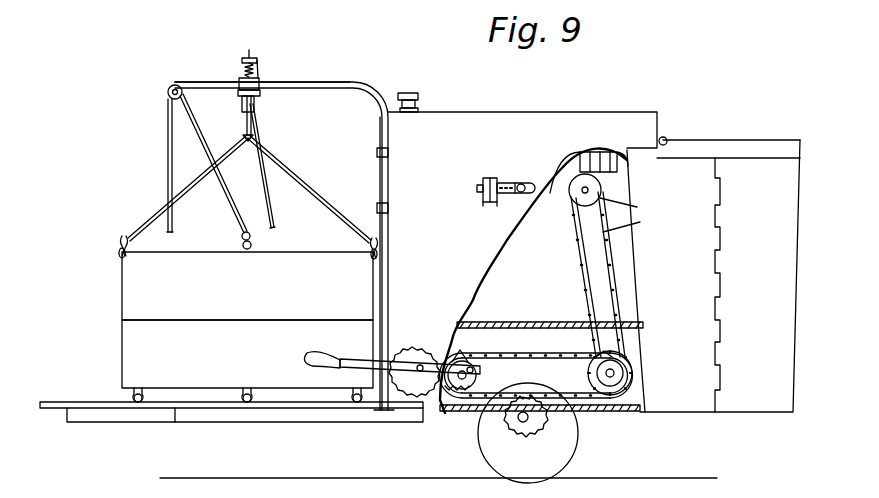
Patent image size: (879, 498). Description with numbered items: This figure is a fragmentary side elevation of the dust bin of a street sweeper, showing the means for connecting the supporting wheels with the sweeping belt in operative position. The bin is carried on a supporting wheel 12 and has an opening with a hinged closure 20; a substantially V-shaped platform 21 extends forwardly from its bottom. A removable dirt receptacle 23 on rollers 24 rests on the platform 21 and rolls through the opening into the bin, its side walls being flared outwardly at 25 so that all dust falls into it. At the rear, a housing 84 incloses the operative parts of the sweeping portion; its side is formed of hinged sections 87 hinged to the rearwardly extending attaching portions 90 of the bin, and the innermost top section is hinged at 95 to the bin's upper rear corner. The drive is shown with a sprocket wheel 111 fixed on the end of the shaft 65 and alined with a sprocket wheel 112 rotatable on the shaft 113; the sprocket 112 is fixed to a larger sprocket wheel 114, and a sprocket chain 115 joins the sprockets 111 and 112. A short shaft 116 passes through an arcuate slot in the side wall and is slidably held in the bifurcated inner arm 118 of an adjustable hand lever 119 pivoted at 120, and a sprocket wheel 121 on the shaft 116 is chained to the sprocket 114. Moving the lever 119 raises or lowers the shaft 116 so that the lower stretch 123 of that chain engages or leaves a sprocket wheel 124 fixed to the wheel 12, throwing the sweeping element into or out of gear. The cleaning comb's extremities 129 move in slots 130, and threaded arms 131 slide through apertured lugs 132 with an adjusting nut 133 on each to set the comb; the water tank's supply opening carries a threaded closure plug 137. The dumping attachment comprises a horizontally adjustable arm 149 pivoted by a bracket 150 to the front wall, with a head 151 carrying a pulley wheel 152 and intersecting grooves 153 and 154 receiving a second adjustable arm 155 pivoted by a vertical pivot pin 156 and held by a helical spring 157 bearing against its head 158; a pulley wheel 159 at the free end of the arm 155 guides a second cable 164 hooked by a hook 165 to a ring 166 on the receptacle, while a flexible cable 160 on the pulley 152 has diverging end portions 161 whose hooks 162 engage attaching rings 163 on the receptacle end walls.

The wheel 12 is at (578, 442).
The hinged closure 20 is at (380, 400).
The platform 21 is at (224, 410).
The removable dirt receptacle 23 is at (247, 354).
The rollers 24 is at (132, 408).
The flared side walls 25 is at (247, 286).
The shaft 65 is at (597, 170).
The housing 84 is at (747, 140).
The hinged sections 87 is at (720, 276).
The rearwardly extending attaching portions 90 is at (562, 281).
The hinge 95 is at (667, 139).
The sprocket wheel 111 is at (574, 204).
The sprocket wheel 112 is at (624, 373).
The shaft 113 is at (615, 365).
The sprocket wheel 114 is at (630, 385).
The sprocket chain 115 is at (580, 268).
The short shaft 116 is at (462, 362).
The bifurcated inner arm 118 is at (535, 386).
The adjustable hand lever 119 is at (350, 358).
The pivot 120 is at (422, 356).
The sprocket wheel 121 is at (536, 364).
The lower stretch 123 is at (460, 398).
The sprocket wheel 124 is at (528, 432).
The extremities 129 is at (522, 184).
The slots 130 is at (510, 195).
The threaded arms 131 is at (477, 189).
The apertured lugs 132 is at (485, 204).
The adjusting nut 133 is at (490, 178).
The threaded closure plug 137 is at (420, 88).
The horizontally adjustable arm 149 is at (327, 85).
The bracket 150 is at (377, 152).
The head 151 is at (241, 90).
The pulley wheel 152 is at (255, 102).
The groove 153 is at (262, 90).
The groove 154 is at (260, 82).
The second adjustable arm 155 is at (202, 80).
The vertical pivot pin 156 is at (260, 70).
The helical spring 157 is at (244, 68).
The head 158 is at (249, 57).
The pulley wheel 159 is at (168, 95).
The flexible cable 160 is at (256, 124).
The diverging end portions 161 is at (313, 176).
The hooks 162 is at (122, 236).
The attaching rings 163 is at (119, 255).
The second cable 164 is at (166, 170).
The hook 165 is at (226, 239).
The ring 166 is at (252, 246).